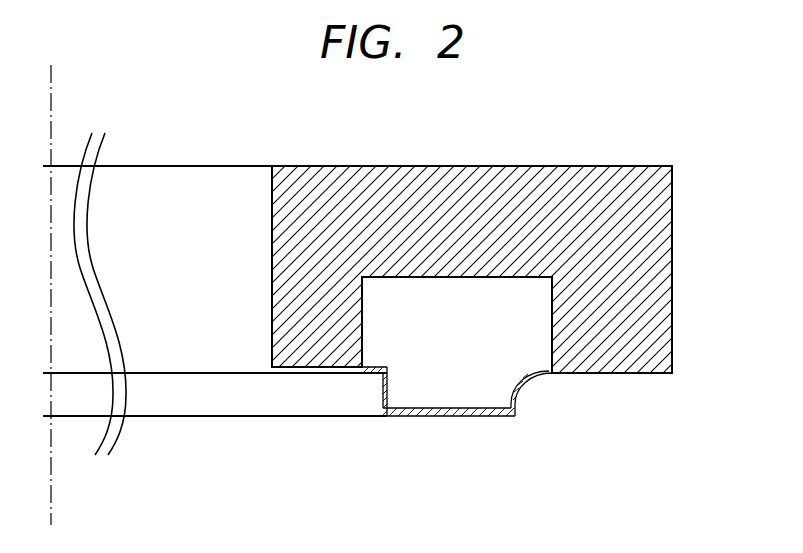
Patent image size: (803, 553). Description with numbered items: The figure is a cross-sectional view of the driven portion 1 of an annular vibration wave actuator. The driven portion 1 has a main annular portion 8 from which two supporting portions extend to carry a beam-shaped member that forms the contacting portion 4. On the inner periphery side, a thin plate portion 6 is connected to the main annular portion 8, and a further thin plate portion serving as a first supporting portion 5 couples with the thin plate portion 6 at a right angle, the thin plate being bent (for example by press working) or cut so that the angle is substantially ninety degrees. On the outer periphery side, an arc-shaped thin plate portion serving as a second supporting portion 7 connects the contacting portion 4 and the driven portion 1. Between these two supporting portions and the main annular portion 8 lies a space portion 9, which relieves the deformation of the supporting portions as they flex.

The driven portion 1 is at (702, 166).
The contacting portion 4 is at (483, 415).
The first supporting portion 5 is at (383, 393).
The thin plate portion 6 is at (373, 375).
The second supporting portion 7 is at (530, 383).
The main annular portion 8 is at (398, 182).
The space portion 9 is at (450, 317).